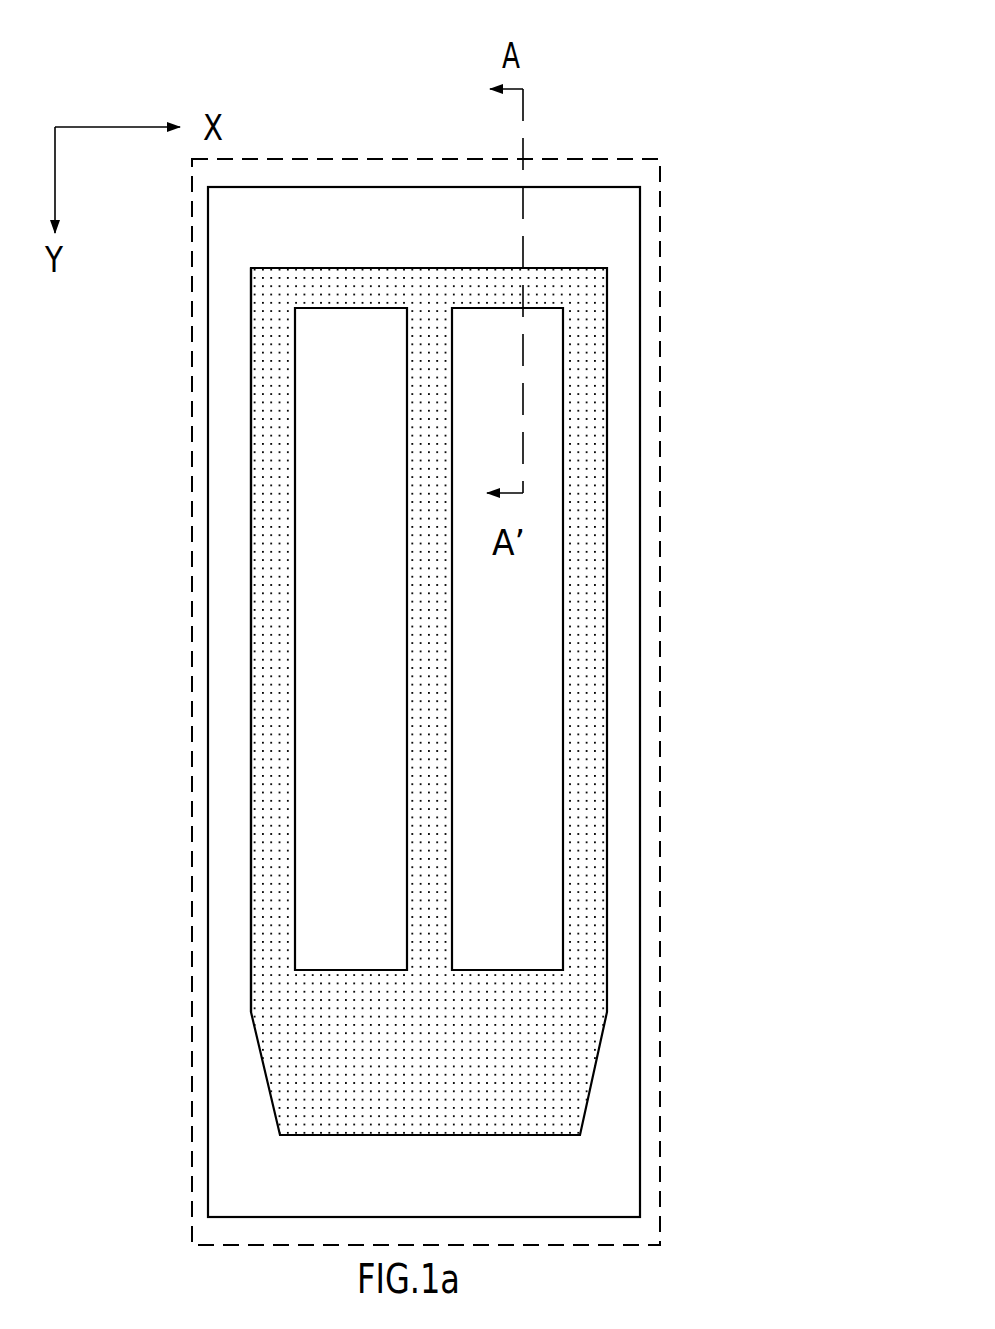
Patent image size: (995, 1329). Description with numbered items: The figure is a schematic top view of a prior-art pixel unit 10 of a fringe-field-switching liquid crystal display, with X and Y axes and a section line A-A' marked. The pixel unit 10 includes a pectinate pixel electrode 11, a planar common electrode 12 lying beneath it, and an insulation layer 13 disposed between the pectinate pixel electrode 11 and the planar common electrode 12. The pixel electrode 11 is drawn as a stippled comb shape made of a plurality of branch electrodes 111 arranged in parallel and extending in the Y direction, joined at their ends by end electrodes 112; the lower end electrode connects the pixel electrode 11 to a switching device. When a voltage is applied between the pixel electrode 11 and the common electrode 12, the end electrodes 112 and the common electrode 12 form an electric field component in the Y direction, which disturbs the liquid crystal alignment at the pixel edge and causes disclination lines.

The pixel unit 10 is at (595, 82).
The pectinate pixel electrode 11 is at (608, 335).
The planar common electrode 12 is at (640, 210).
The insulation layer 13 is at (660, 445).
The branch electrodes 111 is at (250, 678).
The end electrodes 112 is at (252, 297).